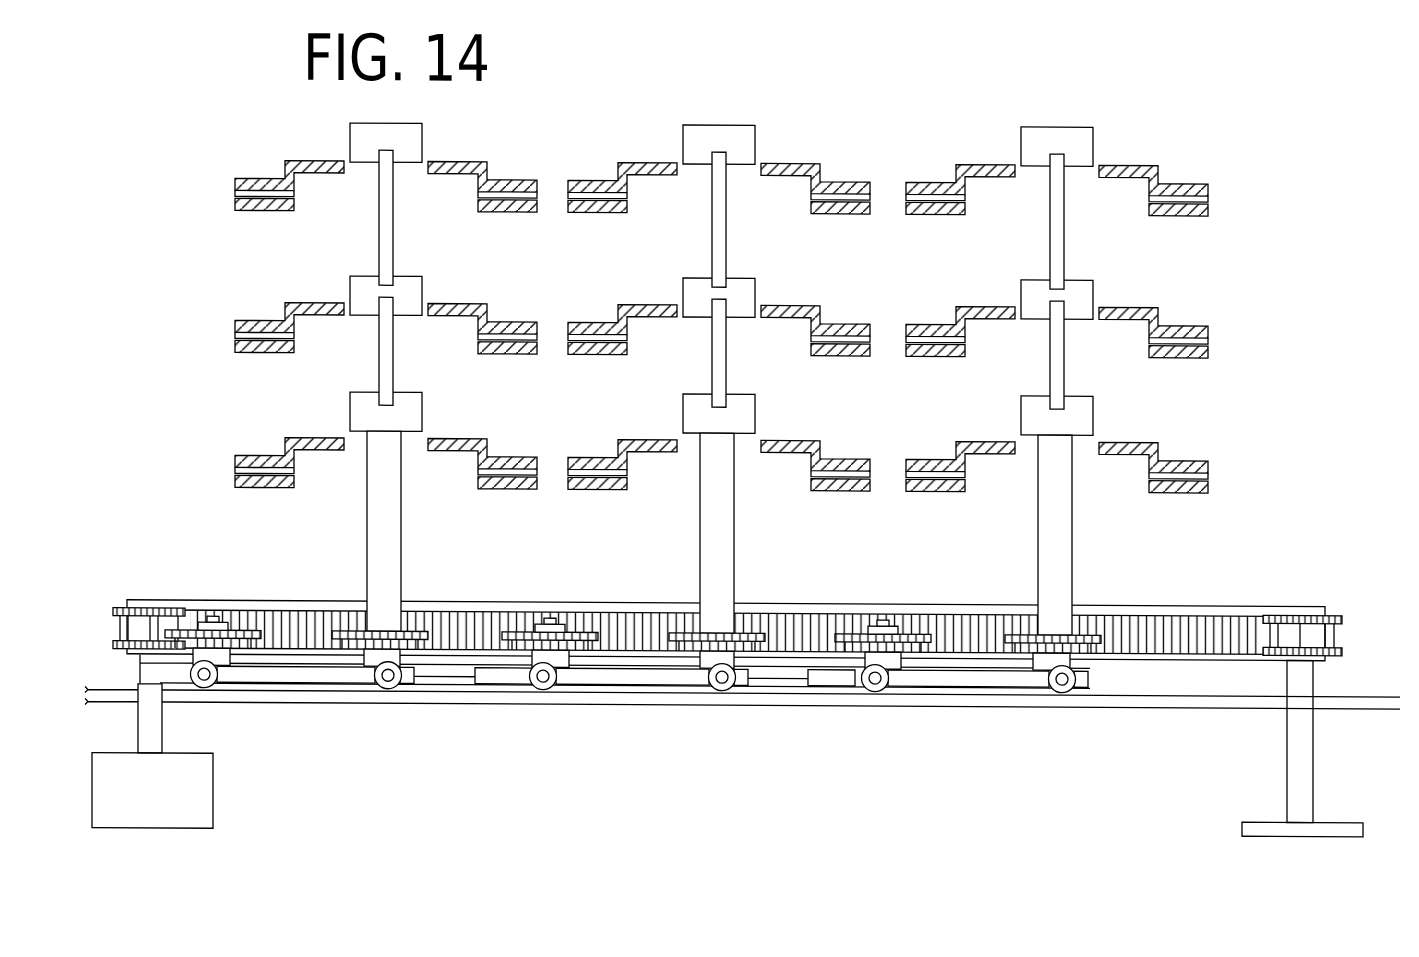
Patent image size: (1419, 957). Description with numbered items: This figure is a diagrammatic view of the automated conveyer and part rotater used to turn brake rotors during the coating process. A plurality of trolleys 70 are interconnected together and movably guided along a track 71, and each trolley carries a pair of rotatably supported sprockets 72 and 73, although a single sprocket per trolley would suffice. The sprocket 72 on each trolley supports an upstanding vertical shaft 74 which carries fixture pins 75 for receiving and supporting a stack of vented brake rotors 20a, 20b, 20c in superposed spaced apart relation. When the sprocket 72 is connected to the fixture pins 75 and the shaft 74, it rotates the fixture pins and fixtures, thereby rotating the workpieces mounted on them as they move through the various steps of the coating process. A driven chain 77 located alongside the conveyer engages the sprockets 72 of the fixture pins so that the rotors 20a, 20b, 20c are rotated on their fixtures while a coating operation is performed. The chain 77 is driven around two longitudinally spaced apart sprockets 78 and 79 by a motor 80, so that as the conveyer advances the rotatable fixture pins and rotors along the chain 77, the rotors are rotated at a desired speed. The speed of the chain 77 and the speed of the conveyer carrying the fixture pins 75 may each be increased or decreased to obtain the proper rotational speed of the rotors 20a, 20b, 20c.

The vented brake rotor 20a is at (1205, 181).
The vented brake rotor 20b is at (1203, 325).
The vented brake rotor 20c is at (1203, 459).
The trolley 70 is at (938, 685).
The track 71 is at (1140, 690).
The sprocket 72 is at (1048, 637).
The sprocket 73 is at (857, 637).
The vertical shaft 74 is at (1072, 509).
The fixture pin 75 is at (1058, 227).
The driven chain 77 is at (1198, 618).
The sprocket 78 is at (115, 607).
The sprocket 79 is at (1333, 610).
The motor 80 is at (202, 774).